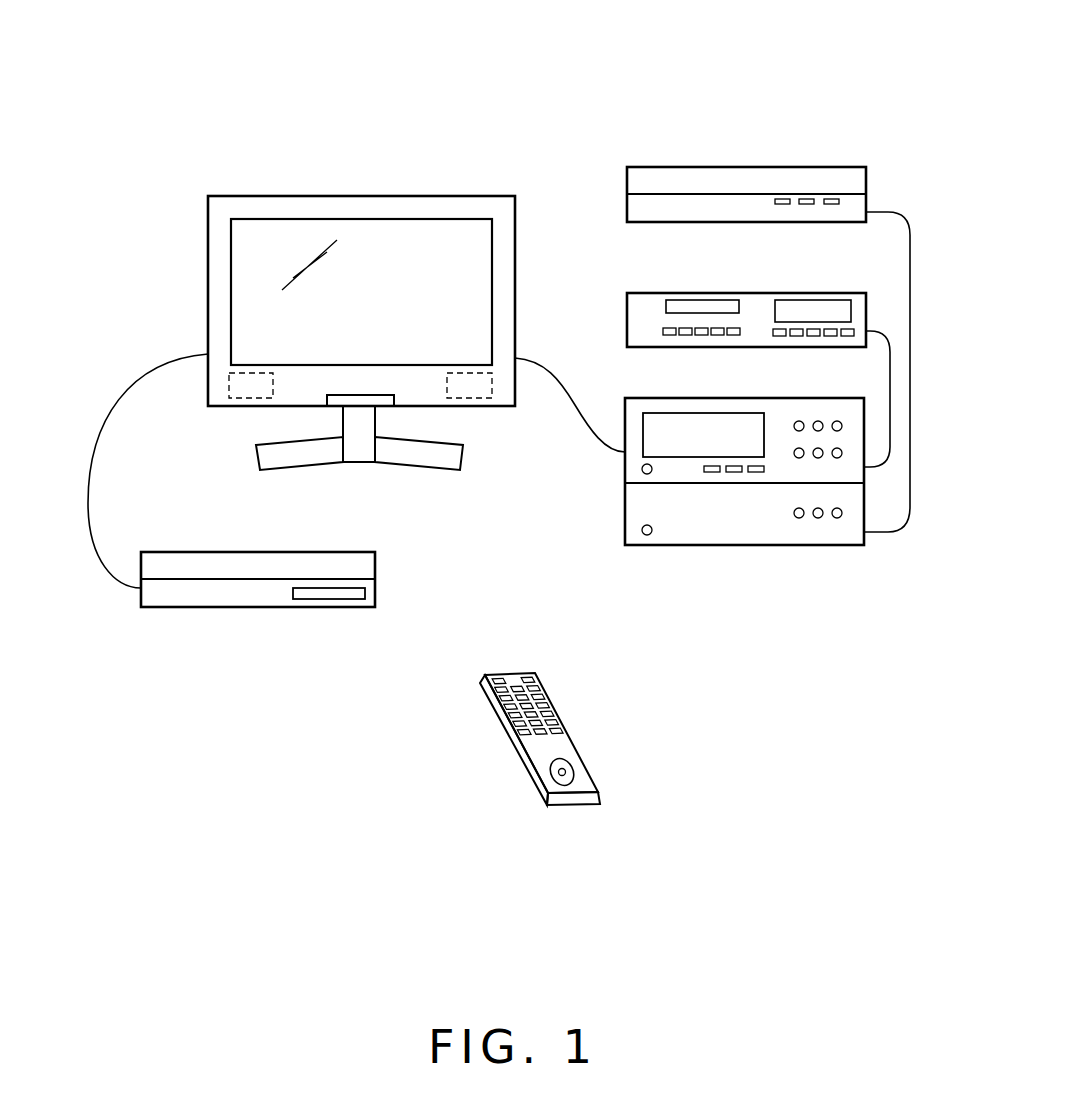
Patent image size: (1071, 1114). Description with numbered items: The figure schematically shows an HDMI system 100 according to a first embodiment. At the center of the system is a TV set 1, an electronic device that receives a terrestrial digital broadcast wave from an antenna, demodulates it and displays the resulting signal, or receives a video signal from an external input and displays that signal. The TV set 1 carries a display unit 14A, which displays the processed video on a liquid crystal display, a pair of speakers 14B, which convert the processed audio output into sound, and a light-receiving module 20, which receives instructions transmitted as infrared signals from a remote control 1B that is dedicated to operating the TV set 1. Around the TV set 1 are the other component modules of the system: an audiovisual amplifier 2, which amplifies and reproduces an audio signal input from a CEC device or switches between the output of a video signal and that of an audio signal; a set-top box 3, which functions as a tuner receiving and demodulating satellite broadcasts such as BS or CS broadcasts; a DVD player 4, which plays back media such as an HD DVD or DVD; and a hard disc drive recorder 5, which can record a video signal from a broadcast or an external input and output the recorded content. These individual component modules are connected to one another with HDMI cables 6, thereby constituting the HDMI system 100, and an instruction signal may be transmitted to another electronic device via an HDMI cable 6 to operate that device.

The HDMI system 100 is at (627, 50).
The TV set 1 is at (283, 205).
The display unit 14A is at (440, 235).
The speaker 14B is at (247, 400).
The light-receiving module 20 is at (356, 398).
The audiovisual (AV) amplifier 2 is at (671, 548).
The set-top box 3 is at (646, 180).
The DVD player 4 is at (641, 302).
The hard disc drive (HDD) recorder 5 is at (191, 596).
The HDMI cables 6 is at (572, 398).
The remote control 1B is at (572, 757).